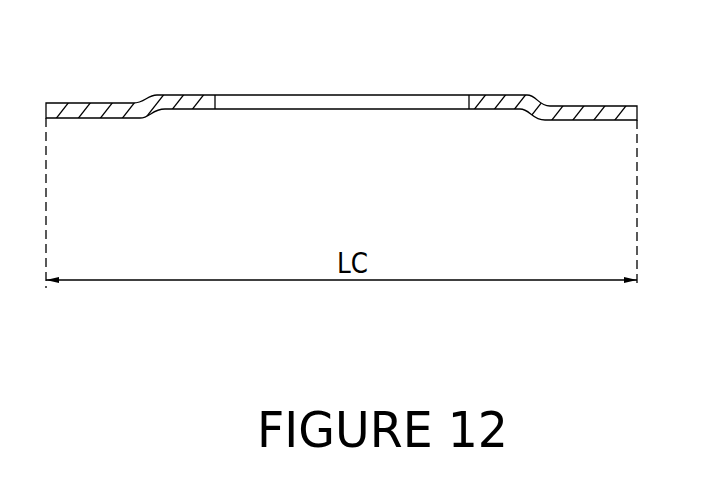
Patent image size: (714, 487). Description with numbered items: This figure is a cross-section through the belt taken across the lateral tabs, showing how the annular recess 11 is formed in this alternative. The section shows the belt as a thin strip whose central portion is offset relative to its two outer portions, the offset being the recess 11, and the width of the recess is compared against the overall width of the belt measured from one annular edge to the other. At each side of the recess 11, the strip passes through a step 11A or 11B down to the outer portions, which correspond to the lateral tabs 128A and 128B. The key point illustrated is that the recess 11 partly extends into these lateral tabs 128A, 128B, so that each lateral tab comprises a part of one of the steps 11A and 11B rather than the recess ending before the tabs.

The annular recess 11 is at (343, 130).
The step 11A is at (147, 116).
The step 11B is at (537, 116).
The lateral tab 128A is at (151, 95).
The lateral tab 128B is at (535, 97).